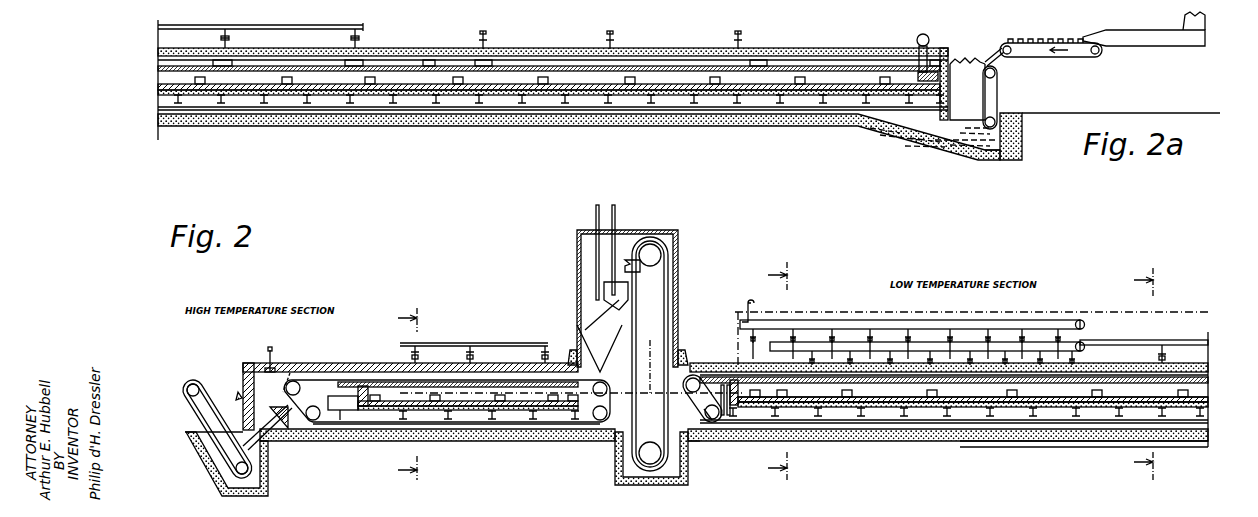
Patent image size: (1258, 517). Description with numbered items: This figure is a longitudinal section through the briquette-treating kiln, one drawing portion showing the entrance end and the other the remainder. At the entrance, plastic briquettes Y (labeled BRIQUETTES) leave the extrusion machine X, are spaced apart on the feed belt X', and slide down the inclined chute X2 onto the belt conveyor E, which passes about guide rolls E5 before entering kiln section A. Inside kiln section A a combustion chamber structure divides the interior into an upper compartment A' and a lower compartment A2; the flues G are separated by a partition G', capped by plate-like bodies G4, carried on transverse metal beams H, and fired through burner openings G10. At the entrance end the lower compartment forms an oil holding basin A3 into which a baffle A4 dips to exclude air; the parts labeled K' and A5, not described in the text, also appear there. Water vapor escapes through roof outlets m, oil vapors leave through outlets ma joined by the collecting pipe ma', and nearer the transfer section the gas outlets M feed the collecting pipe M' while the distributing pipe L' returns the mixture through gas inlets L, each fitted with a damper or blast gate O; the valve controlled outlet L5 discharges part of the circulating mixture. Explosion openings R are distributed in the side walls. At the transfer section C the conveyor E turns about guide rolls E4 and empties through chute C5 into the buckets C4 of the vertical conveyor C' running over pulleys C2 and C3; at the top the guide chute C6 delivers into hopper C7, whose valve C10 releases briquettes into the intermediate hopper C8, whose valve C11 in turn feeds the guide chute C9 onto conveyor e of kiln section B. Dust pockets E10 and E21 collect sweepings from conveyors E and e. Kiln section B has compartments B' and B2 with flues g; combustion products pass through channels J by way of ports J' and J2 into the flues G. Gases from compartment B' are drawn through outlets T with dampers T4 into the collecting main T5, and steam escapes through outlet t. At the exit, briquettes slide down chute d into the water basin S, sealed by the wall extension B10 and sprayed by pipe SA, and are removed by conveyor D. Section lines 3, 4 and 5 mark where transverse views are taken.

In FIG. 2A, the collecting pipe ma' is at (260, 16).
In FIG. 2, the collecting pipe ma' is at (1144, 317).
In FIG. 2A, the vapor outlets ma is at (290, 40).
In FIG. 2, the vapor outlets ma is at (1171, 339).
In FIG. 2A, the furnace roof A5 is at (428, 62).
In FIG. 2A, the roof outlets m is at (772, 40).
In FIG. 2A, the belt conveyor E is at (688, 64).
In FIG. 2, the belt conveyor E is at (1200, 378).
In FIG. 2A, the upper compartment A' is at (529, 53).
In FIG. 2, the upper compartment A' is at (1084, 418).
In FIG. 2A, the lower compartment A2 is at (162, 104).
In FIG. 2, the lower compartment A2 is at (1130, 425).
In FIG. 2A, the explosion openings R is at (332, 66).
In FIG. 2, the explosion openings R is at (978, 380).
In FIG. 2A, the partition G' is at (542, 118).
In FIG. 2A, the burner openings G10 is at (372, 84).
In FIG. 2, the burner openings G10 is at (1012, 400).
In FIG. 2A, the combustion chambers G is at (549, 115).
In FIG. 2, the combustion chambers G is at (973, 430).
In FIG. 2A, the plate-like bodies G4 is at (345, 90).
In FIG. 2, the plate-like bodies G4 is at (986, 382).
In FIG. 2A, the metal beams H is at (395, 104).
In FIG. 2, the metal beams H is at (822, 416).
In FIG. 2A, the oil holding basin A3 is at (992, 140).
In FIG. 2A, the baffle A4 is at (945, 105).
In FIG. 2A, the stack K' is at (939, 49).
In FIG. 2A, the briquettes BRIQUETTES is at (1005, 38).
In FIG. 2A, the extrusion machine X is at (1144, 29).
In FIG. 2A, the feed belt X' is at (1051, 64).
In FIG. 2A, the inclined chute X2 is at (1000, 62).
In FIG. 2A, the plastic briquettes Y is at (1047, 44).
In FIG. 2A, the guide rolls E5 is at (990, 118).
In FIG. 2, the section line 3- 3 is at (415, 394).
In FIG. 2, the section line 4- 4 is at (1151, 374).
In FIG. 2, the section line 5- 5 is at (785, 372).
In FIG. 2, the damper controlled outlet t is at (267, 356).
In FIG. 2, the conveyor e is at (306, 370).
In FIG. 2, the kiln section B is at (447, 370).
In FIG. 2, the compartment B' is at (458, 338).
In FIG. 2, the upper compartment B2 is at (378, 420).
In FIG. 2, the end wall extension B10 is at (204, 421).
In FIG. 2, the dust pocket E21 is at (360, 398).
In FIG. 2, the ports J' is at (555, 434).
In FIG. 2, the combustion chambers g is at (462, 406).
In FIG. 2, the water basin S is at (268, 486).
In FIG. 2, the spray pipe SA is at (240, 394).
In FIG. 2, the conveyor belt D is at (178, 405).
In FIG. 2, the inclined chute d is at (266, 446).
In FIG. 2, the gas collecting main T5 is at (440, 342).
In FIG. 2, the controlling damper T4 is at (472, 352).
In FIG. 2, the gas outlets T is at (543, 352).
In FIG. 2, the transfer section C is at (615, 298).
In FIG. 2, the hopper C7 is at (604, 278).
In FIG. 2, the intermediate hopper C8 is at (604, 306).
In FIG. 2, the guide chute C9 is at (588, 338).
In FIG. 2, the valve C10 is at (622, 300).
In FIG. 2, the valve C11 is at (616, 322).
In FIG. 2, the guide chute C6 is at (642, 270).
In FIG. 2, the upper pulley C2 is at (661, 254).
In FIG. 2, the vertical conveyor belt C' is at (624, 358).
In FIG. 2, the channels J is at (645, 367).
In FIG. 2, the lower pulley C3 is at (648, 462).
In FIG. 2, the buckets C4 is at (668, 470).
In FIG. 2, the chute C5 is at (698, 442).
In FIG. 2, the kiln section A is at (949, 372).
In FIG. 2, the guide rolls E4 is at (696, 378).
In FIG. 2, the dust pocket E10 is at (716, 418).
In FIG. 2, the ports J2 is at (730, 418).
In FIG. 2, the valve controlled outlet L5 is at (768, 296).
In FIG. 2, the distributing pipe L' is at (912, 304).
In FIG. 2, the throttling damper O is at (880, 346).
In FIG. 2, the collecting pipe M' is at (1103, 333).
In FIG. 2, the gas inlets L is at (905, 322).
In FIG. 2, the gas outlets M is at (942, 325).